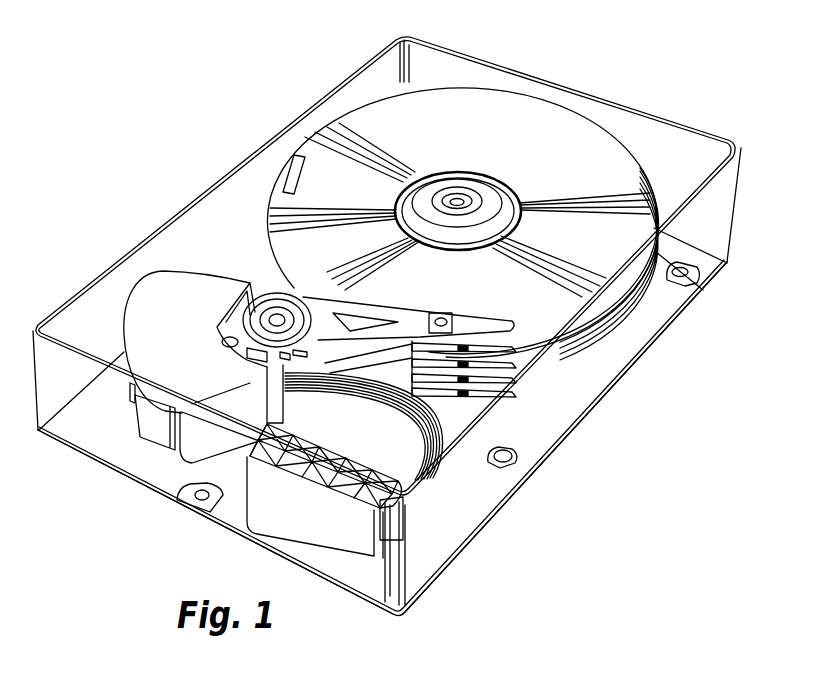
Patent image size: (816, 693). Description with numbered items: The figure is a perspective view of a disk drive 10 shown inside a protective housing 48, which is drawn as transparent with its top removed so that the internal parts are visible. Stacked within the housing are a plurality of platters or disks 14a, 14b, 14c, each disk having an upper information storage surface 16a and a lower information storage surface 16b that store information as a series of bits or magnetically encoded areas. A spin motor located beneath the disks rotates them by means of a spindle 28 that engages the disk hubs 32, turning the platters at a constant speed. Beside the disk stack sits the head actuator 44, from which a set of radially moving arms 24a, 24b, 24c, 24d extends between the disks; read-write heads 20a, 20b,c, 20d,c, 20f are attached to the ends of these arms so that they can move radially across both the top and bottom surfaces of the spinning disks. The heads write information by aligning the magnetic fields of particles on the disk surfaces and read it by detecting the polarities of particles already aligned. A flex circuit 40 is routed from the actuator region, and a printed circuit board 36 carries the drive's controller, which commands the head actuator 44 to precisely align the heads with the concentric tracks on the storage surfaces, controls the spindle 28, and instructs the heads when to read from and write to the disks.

The disk drive 10 is at (122, 512).
The disk 14a is at (635, 153).
The disk 14b is at (735, 232).
The disk 14c is at (724, 266).
The upper information storage surface 16a is at (573, 133).
The lower information storage surface 16b is at (618, 303).
The read-write head 20a is at (520, 395).
The read-write heads 20b,c is at (522, 410).
The read-write heads 20d,c is at (518, 425).
The read-write head 20f is at (485, 435).
The radially moving arm 24a is at (412, 345).
The radially moving arm 24b is at (410, 358).
The radially moving arm 24c is at (408, 372).
The radially moving arm 24d is at (404, 388).
The spindle 28 is at (457, 197).
The disk hub 32 is at (485, 197).
The printed circuit board 36 is at (60, 431).
The flex circuit 40 is at (416, 505).
The head actuator 44 is at (223, 258).
The protective housing 48 is at (33, 364).